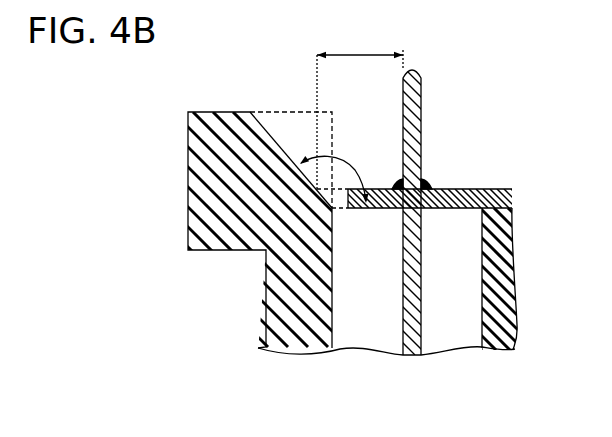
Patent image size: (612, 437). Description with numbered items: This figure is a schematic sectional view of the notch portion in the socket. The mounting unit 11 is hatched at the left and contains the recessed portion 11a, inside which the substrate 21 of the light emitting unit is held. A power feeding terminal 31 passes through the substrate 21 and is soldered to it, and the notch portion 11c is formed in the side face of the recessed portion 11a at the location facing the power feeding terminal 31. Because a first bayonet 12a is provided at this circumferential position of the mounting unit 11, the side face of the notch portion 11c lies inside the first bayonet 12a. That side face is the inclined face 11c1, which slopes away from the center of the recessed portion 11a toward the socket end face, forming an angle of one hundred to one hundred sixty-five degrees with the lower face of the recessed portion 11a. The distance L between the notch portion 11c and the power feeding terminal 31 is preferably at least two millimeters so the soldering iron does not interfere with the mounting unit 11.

The mounting unit 11 is at (298, 327).
The recessed portion 11a is at (369, 135).
The notch portion 11c is at (292, 128).
The inclined face 11c1 is at (296, 157).
The first bayonet 12a is at (215, 181).
The substrate 21 is at (473, 189).
The power feeding terminal 31 is at (413, 148).